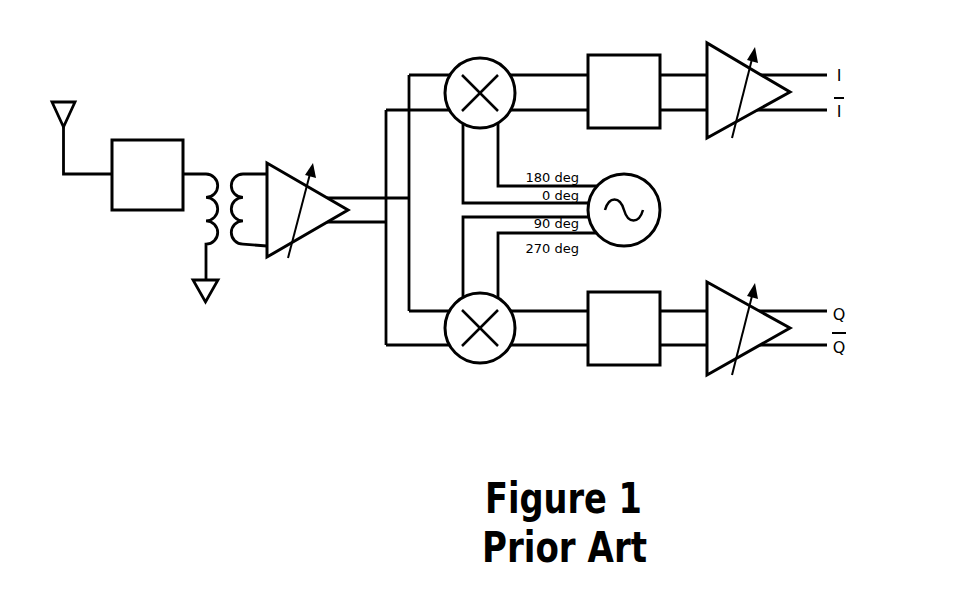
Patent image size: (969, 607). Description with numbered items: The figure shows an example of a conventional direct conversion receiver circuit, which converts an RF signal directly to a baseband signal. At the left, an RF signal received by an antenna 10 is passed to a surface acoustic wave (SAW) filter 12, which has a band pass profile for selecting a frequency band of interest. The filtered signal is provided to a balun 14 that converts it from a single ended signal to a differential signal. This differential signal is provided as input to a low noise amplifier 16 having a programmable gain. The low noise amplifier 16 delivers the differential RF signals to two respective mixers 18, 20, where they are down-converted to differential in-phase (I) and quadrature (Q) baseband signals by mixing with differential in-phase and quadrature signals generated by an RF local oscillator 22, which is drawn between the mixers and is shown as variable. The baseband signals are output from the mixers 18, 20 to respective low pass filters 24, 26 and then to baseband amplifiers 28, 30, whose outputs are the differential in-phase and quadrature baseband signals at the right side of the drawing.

The antenna 10 is at (63, 92).
The surface acoustic wave (SAW) filter 12 is at (165, 140).
The balun 14 is at (222, 162).
The low noise amplifier 16 is at (283, 163).
The mixer 18 is at (482, 58).
The mixer 20 is at (480, 364).
The RF local oscillator 22 is at (660, 203).
The low pass filter 24 is at (632, 55).
The low pass filter 26 is at (628, 365).
The baseband amplifier 28 is at (728, 49).
The baseband amplifier 30 is at (748, 358).